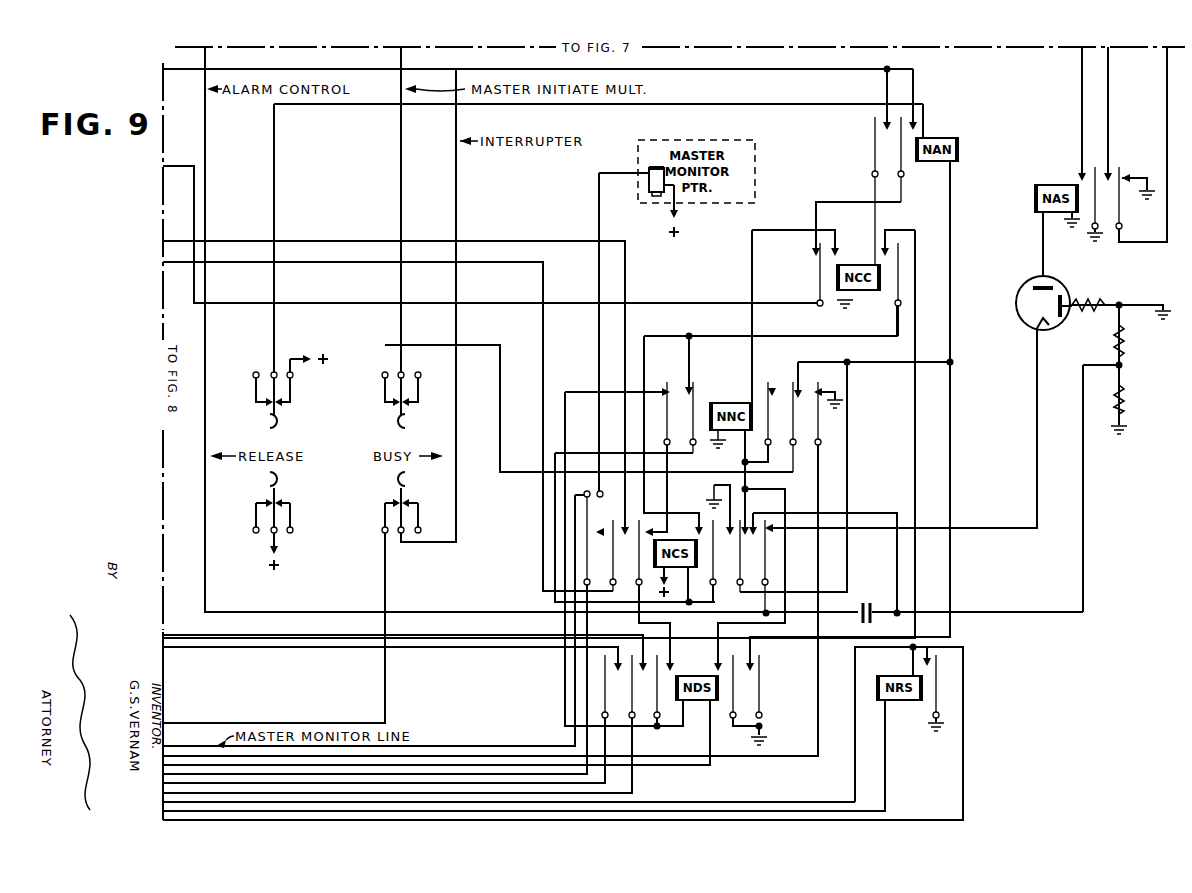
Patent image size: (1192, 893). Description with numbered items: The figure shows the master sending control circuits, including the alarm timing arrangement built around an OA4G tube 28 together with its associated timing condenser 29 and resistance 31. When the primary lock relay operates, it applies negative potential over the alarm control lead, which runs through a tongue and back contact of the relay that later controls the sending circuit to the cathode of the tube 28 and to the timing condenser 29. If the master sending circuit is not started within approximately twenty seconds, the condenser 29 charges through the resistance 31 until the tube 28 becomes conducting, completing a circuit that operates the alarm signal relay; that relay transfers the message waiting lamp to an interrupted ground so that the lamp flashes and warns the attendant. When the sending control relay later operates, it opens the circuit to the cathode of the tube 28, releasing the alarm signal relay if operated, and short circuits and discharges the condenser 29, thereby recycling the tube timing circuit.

The OA4G tube 28 is at (1020, 292).
The timing condenser 29 is at (866, 602).
The resistance 31 is at (1126, 394).